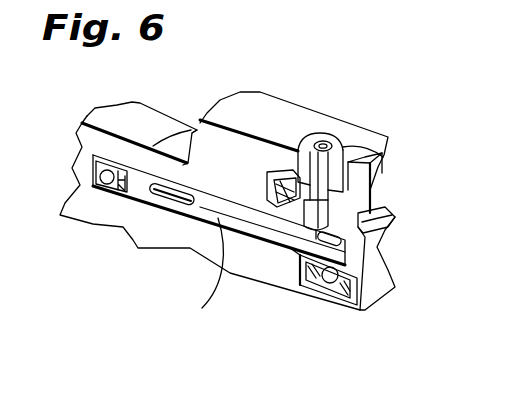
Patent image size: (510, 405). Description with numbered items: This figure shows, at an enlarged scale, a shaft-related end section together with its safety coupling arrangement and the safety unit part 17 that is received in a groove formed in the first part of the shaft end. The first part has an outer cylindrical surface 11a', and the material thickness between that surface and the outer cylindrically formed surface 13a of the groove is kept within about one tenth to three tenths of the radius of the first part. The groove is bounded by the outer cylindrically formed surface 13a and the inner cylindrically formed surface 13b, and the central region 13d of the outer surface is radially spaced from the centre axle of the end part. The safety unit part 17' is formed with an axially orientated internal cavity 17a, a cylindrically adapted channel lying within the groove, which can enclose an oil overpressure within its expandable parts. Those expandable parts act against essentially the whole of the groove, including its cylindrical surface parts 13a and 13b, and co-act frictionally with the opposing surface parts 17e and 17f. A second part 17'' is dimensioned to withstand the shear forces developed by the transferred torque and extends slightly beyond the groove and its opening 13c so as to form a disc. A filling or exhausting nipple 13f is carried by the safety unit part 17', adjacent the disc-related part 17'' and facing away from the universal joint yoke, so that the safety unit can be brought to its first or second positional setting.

The outer cylindrical surface 11a' is at (210, 184).
The outer cylindrically formed surface 13a is at (207, 183).
The inner cylindrically formed surface 13b is at (276, 228).
The opening 13c is at (373, 210).
The central region 13d is at (243, 193).
The filling nipple 13f is at (331, 139).
The safety unit part 17 is at (219, 229).
The safety unit part 17' is at (283, 277).
The second part 17'' is at (410, 263).
The internal cavity 17a is at (157, 193).
The opposing surface part 17e is at (222, 193).
The opposing surface part 17f is at (194, 277).